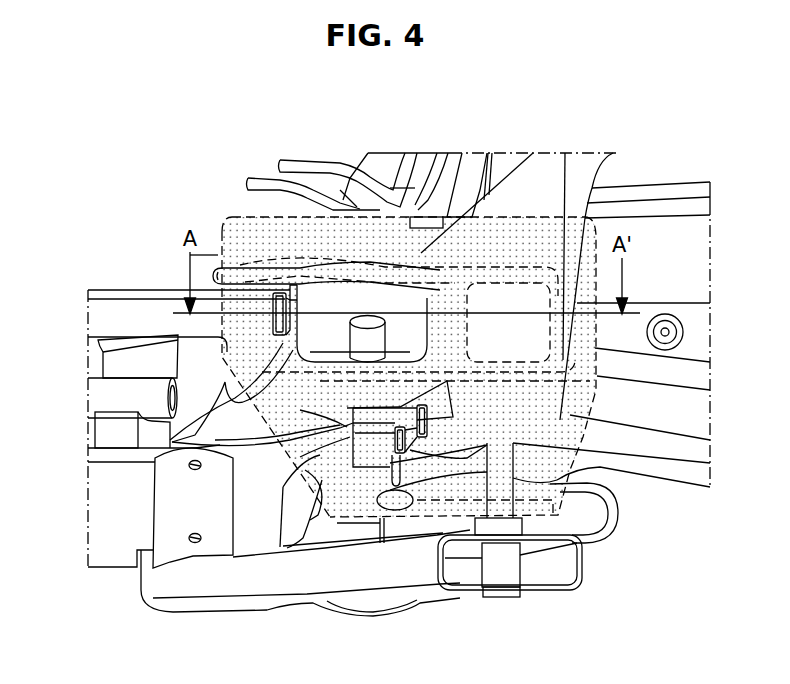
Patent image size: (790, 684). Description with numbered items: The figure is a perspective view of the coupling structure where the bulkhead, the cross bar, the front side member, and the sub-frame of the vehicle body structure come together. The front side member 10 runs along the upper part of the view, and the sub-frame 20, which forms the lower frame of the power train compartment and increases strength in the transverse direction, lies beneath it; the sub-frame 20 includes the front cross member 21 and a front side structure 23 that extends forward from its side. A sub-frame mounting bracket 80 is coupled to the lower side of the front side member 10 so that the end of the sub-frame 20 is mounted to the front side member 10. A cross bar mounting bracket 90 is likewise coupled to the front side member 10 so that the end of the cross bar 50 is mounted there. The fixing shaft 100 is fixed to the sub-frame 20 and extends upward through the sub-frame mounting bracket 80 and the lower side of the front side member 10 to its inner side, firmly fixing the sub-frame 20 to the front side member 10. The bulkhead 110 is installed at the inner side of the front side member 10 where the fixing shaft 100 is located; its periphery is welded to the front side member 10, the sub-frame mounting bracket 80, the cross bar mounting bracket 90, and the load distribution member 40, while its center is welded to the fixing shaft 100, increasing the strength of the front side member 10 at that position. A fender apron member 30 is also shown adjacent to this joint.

The front side member 10 is at (662, 215).
The sub-frame 20 is at (122, 588).
The front cross member 21 is at (107, 517).
The front side structure 23 is at (400, 573).
The fender apron member 30 is at (567, 413).
The load distribution member 40 is at (578, 172).
The cross bar 50 is at (130, 310).
The sub-frame mounting bracket 80 is at (353, 490).
The cross bar mounting bracket 90 is at (255, 285).
The fixing shaft 100 is at (382, 333).
The bulkhead 110 is at (333, 288).